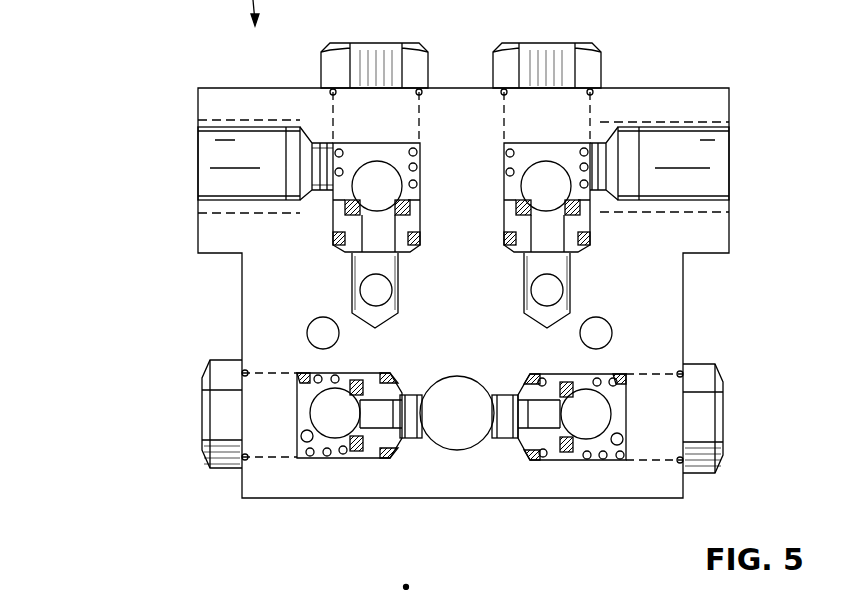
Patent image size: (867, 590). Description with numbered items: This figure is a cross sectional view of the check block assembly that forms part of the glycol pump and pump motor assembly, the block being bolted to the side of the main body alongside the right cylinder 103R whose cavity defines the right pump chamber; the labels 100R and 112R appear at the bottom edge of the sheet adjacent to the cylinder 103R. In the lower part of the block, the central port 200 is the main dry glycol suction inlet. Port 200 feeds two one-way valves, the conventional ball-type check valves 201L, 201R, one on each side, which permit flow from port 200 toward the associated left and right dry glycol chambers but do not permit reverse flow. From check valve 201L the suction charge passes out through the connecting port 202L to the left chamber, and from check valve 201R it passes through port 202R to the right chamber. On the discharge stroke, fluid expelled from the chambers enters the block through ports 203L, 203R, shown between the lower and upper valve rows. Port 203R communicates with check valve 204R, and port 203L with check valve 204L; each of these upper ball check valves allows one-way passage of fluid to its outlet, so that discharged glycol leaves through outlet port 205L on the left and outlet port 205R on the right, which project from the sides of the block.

The port 200 is at (459, 437).
The check valve 201L is at (326, 464).
The check valve 201R is at (588, 467).
The port 202L is at (300, 438).
The port 202R is at (623, 445).
The port 203L is at (365, 290).
The port 203R is at (548, 292).
The check valve 204L is at (377, 178).
The check valve 204R is at (546, 180).
The outlet port 205L is at (204, 150).
The outlet port 205R is at (703, 156).
The right housing 100R is at (406, 587).
The cylinder 103R is at (428, 582).
The right passage 112R is at (490, 589).